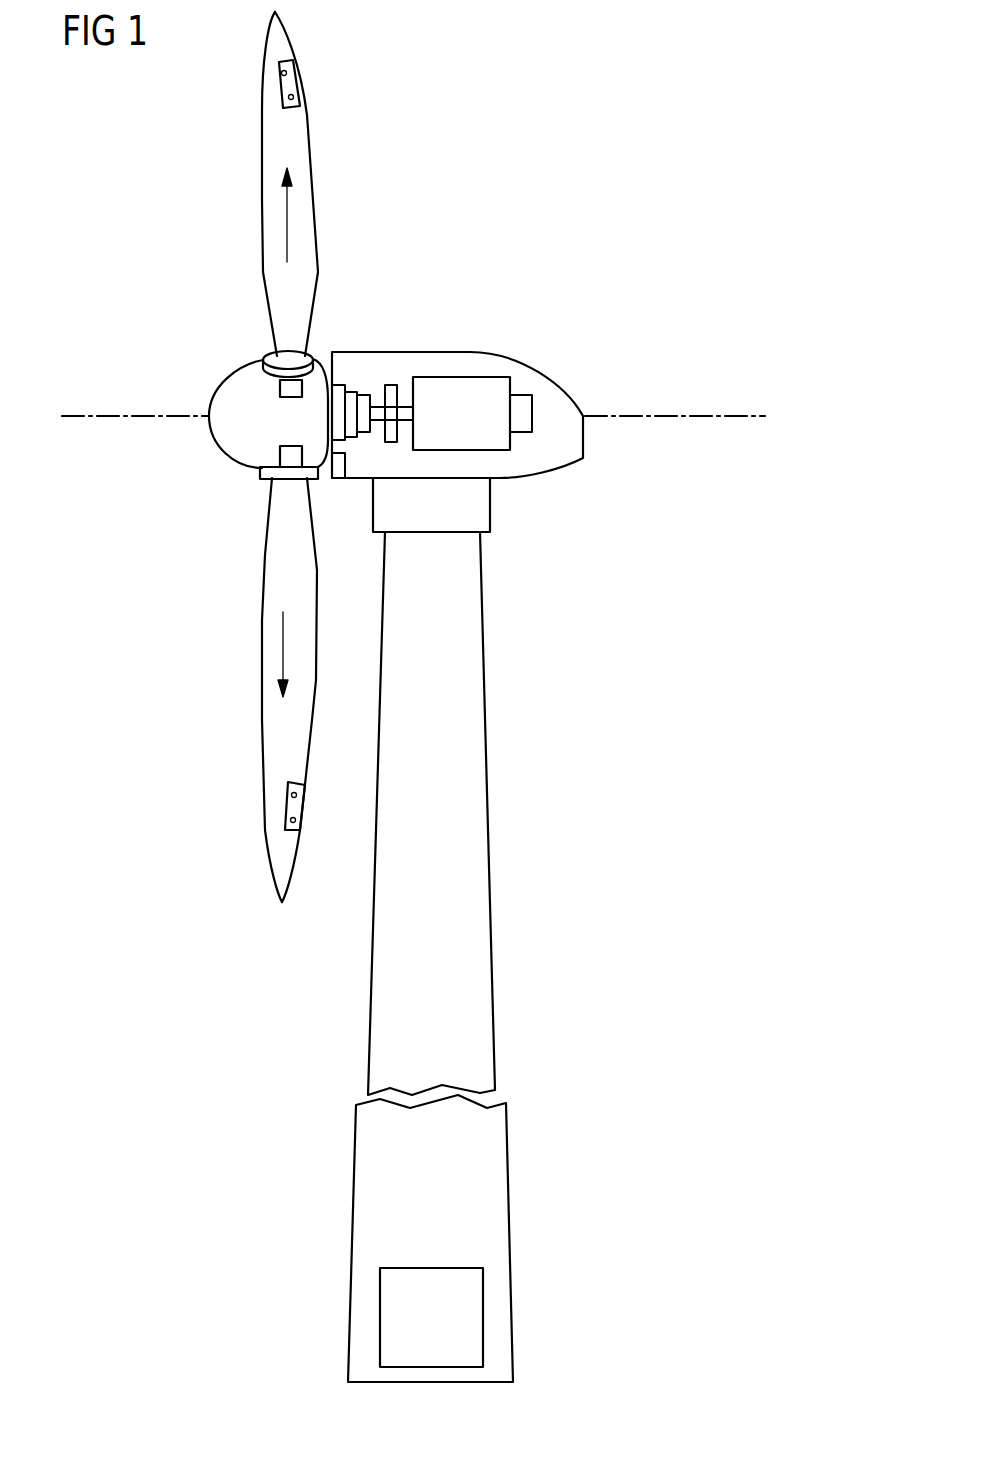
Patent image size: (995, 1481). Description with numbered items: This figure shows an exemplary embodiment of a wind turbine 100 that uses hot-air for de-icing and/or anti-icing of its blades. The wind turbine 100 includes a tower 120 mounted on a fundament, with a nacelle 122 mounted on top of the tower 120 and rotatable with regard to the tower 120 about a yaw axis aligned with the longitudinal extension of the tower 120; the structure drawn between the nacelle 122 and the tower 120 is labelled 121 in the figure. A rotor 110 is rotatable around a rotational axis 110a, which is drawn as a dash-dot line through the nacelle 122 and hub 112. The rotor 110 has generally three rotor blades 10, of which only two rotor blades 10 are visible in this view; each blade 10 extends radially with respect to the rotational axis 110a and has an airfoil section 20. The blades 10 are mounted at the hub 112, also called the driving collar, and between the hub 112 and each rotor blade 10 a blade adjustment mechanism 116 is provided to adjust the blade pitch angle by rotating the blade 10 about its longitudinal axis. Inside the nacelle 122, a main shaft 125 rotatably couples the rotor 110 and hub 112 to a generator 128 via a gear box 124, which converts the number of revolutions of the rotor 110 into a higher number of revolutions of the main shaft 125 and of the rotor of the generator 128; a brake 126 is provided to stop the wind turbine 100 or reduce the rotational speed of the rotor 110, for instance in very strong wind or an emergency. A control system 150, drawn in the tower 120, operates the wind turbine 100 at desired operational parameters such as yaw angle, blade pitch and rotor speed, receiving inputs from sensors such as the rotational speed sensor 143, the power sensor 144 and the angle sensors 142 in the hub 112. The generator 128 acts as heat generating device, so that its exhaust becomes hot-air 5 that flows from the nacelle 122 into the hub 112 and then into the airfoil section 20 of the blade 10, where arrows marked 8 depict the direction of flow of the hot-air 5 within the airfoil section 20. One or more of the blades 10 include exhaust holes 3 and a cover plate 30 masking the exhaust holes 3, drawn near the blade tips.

The wind turbine 100 is at (642, 149).
The rotor 110 is at (172, 326).
The rotational axis 110a is at (120, 414).
The hub 112 is at (227, 437).
The blade adjustment mechanism 116 is at (264, 354).
The angle sensors 142 is at (290, 393).
The rotor blade 10 is at (297, 47).
The airfoil section 20 is at (328, 193).
The hot-air 5 is at (244, 432).
The direction of flow of the hot-air within the airfoil section 8 is at (286, 212).
The cover plate 30 is at (282, 84).
The exhaust holes 3 is at (294, 97).
The nacelle 122 is at (542, 372).
The gear box 124 is at (352, 400).
The main shaft 125 is at (380, 418).
The brake 126 is at (392, 390).
The generator 128 is at (460, 392).
The power sensor 144 is at (525, 417).
The rotational speed sensor 143 is at (338, 472).
The yaw system 121 is at (483, 504).
The tower 120 is at (473, 677).
The control system 150 is at (432, 1282).